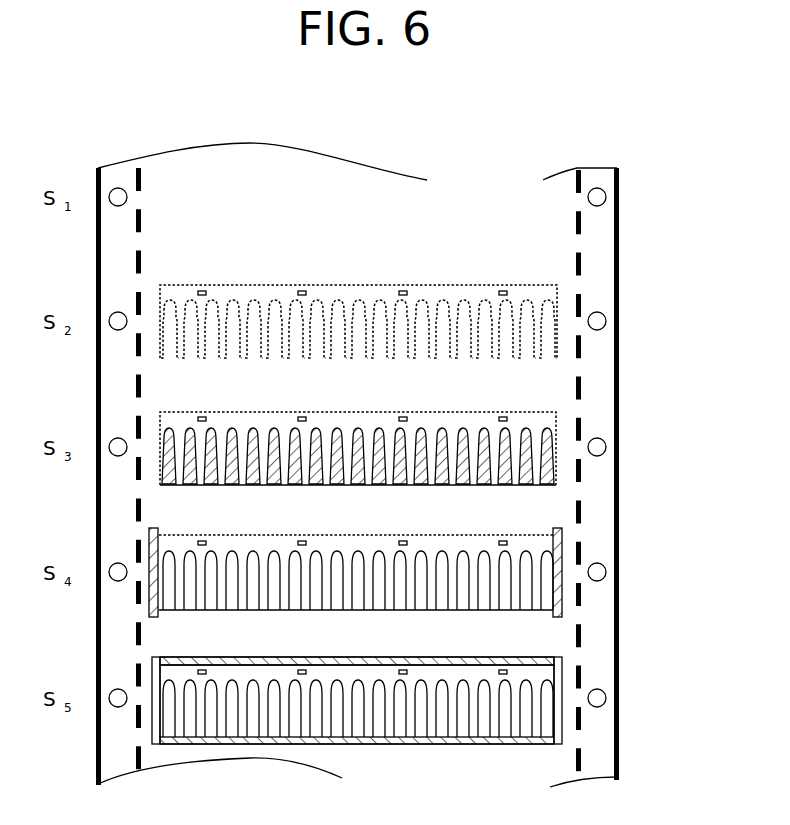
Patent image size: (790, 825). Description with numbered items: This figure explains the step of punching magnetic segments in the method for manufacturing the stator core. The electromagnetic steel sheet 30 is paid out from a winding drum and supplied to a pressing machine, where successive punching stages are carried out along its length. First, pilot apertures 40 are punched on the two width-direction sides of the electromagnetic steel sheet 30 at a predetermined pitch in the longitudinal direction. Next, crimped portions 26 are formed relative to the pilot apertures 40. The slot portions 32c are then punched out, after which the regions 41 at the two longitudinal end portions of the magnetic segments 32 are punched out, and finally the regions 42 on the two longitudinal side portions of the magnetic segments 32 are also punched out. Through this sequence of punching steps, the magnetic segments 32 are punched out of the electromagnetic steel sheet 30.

The electromagnetic steel sheet 30 is at (397, 191).
The pilot apertures 40 is at (118, 195).
The crimped portions 26 is at (202, 292).
The magnetic segments 32 is at (557, 287).
The slot portions 32c is at (548, 442).
The regions at two longitudinal end portions 41 is at (560, 548).
The regions on two longitudinal side portions 42 is at (532, 657).